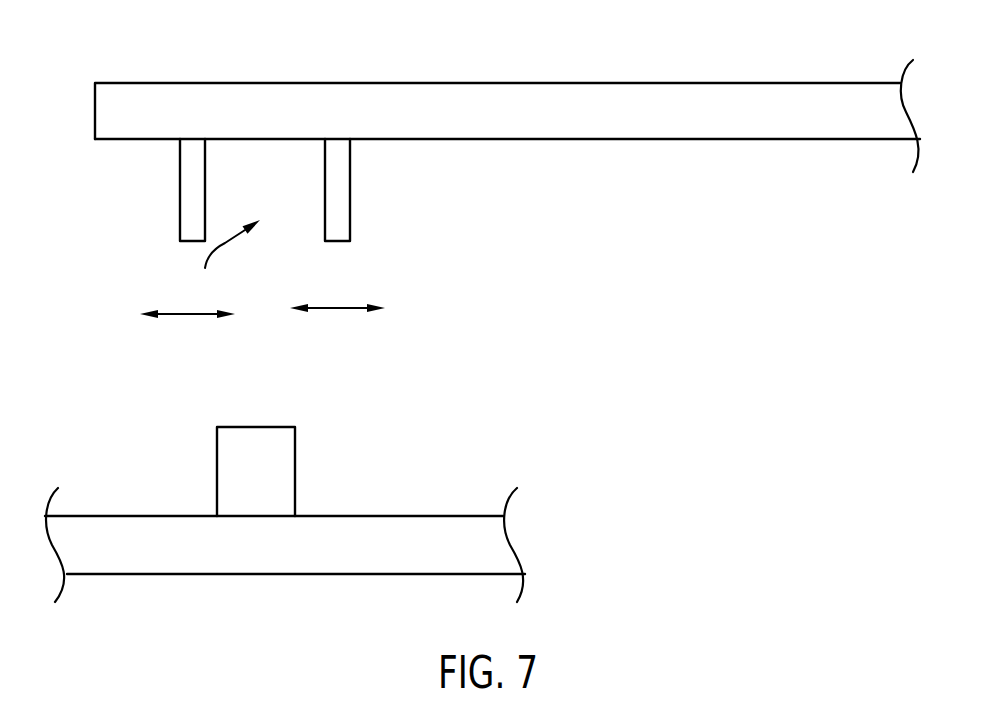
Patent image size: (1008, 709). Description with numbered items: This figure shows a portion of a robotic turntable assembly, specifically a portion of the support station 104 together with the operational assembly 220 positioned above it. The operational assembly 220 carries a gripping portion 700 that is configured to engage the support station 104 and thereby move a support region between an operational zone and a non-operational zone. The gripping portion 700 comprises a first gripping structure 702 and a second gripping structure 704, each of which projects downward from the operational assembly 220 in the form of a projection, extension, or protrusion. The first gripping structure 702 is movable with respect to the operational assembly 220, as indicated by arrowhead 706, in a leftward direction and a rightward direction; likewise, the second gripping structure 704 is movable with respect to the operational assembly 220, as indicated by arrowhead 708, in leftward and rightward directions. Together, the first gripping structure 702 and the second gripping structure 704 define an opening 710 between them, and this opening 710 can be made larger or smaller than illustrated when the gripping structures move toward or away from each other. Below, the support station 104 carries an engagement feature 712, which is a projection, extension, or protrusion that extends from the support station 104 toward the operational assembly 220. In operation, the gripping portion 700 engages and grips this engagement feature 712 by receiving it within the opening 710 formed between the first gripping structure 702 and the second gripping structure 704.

The gripping portion 700 is at (103, 199).
The operational assembly 220 is at (758, 103).
The first gripping structure 702 is at (193, 225).
The second gripping structure 704 is at (340, 213).
The arrowhead 706 is at (190, 314).
The arrowhead 708 is at (333, 308).
The opening 710 is at (226, 260).
The engagement feature 712 is at (175, 464).
The support station 104 is at (457, 532).